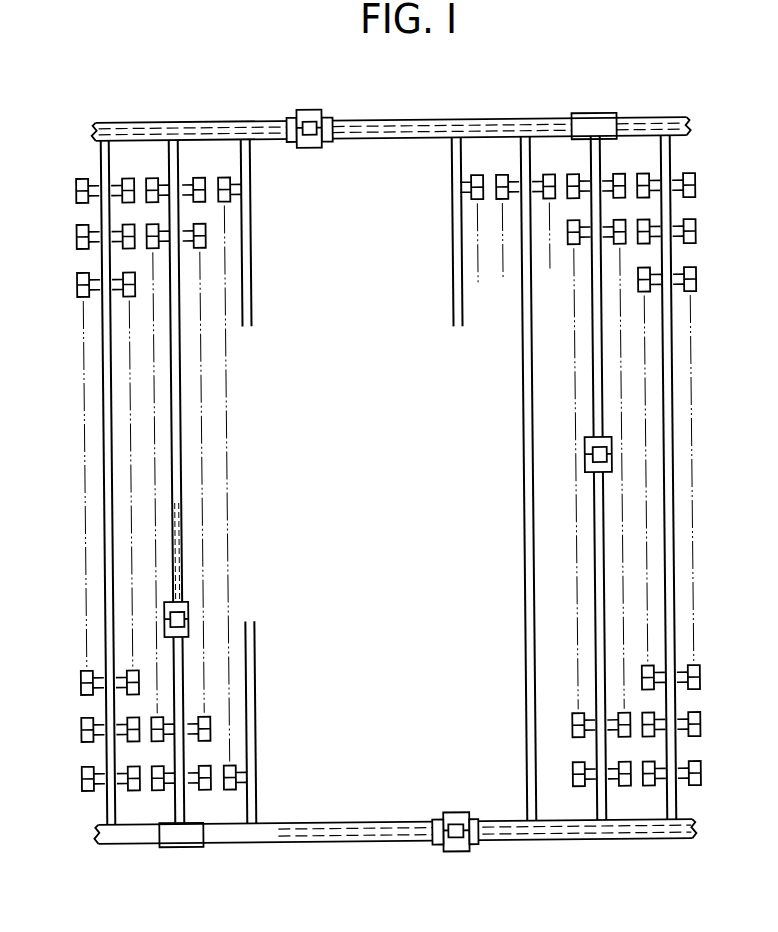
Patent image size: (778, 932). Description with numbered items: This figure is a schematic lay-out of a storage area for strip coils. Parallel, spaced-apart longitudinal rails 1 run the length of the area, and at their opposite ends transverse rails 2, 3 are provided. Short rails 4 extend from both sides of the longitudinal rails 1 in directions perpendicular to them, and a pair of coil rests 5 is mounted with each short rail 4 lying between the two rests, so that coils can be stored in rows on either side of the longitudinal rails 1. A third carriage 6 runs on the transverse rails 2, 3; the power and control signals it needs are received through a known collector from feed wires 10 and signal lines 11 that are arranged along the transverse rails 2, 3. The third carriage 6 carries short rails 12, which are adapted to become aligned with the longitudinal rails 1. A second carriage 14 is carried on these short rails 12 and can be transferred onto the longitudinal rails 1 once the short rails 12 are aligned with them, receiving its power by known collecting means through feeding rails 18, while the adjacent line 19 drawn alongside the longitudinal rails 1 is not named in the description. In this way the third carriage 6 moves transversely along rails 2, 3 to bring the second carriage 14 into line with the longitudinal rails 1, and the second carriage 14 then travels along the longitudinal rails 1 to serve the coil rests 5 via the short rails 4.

The longitudinal rails 1 is at (177, 402).
The transverse rail 2 is at (402, 120).
The transverse rail 3 is at (335, 843).
The short rails 4 is at (186, 239).
The coil rests 5 is at (204, 224).
The third carriage 6 is at (470, 846).
The feed wires 10 is at (529, 126).
The signal lines 11 is at (471, 125).
The short rails 12 is at (186, 841).
The second carriage 14 is at (188, 612).
The feeding rails 18 is at (177, 540).
The inner wire core 19 is at (178, 558).